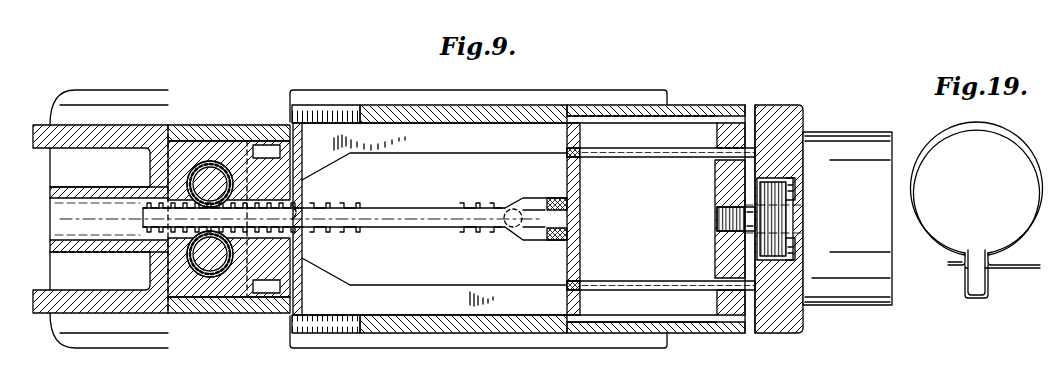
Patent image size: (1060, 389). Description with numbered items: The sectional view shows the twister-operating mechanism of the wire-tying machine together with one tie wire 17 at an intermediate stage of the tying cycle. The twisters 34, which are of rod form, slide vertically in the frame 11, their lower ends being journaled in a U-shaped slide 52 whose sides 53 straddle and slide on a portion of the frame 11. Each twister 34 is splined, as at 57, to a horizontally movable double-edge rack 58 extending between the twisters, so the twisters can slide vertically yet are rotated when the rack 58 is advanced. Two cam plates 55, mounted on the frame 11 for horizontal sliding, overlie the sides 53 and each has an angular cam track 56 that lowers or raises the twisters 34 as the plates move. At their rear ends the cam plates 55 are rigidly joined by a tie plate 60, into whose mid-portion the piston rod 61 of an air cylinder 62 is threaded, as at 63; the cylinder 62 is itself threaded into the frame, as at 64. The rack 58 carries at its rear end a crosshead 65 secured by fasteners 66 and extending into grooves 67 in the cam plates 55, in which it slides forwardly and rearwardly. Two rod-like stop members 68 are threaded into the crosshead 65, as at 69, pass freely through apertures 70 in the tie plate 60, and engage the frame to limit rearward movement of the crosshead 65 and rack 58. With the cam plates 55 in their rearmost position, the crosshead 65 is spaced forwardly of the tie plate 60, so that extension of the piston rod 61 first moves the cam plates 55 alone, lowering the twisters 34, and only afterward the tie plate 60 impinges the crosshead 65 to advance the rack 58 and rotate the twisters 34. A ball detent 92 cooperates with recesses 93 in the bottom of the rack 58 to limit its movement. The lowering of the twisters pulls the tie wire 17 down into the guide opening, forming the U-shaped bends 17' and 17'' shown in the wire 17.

In FIG. 9, the frame 11 is at (164, 122).
In FIG. 9, the sides of the slide 53 is at (192, 125).
In FIG. 9, the slide 52 is at (249, 114).
In FIG. 9, the twisters 34 is at (212, 170).
In FIG. 9, the spline 57 is at (192, 178).
In FIG. 9, the rack 58 is at (150, 219).
In FIG. 9, the ball detent 92 is at (300, 207).
In FIG. 9, the recesses 93 is at (512, 209).
In FIG. 9, the fasteners 66 is at (572, 207).
In FIG. 9, the cam track 56 is at (352, 110).
In FIG. 9, the cam plates 55 is at (386, 110).
In FIG. 9, the grooves 67 is at (681, 119).
In FIG. 9, the crosshead 65 is at (578, 176).
In FIG. 9, the threaded connection 69 is at (580, 152).
In FIG. 9, the stop members 68 is at (650, 148).
In FIG. 9, the apertures 70 is at (725, 138).
In FIG. 9, the tie plate 60 is at (720, 182).
In FIG. 9, the threaded connection 63 is at (718, 222).
In FIG. 9, the piston rod 61 is at (746, 208).
In FIG. 9, the threaded connection 64 is at (790, 216).
In FIG. 9, the air cylinder 62 is at (858, 150).
In FIG. 19, the tie wire 17 is at (977, 183).
In FIG. 19, the U-shaped bend 17'' is at (960, 274).
In FIG. 19, the U-shaped bend 17' is at (994, 264).